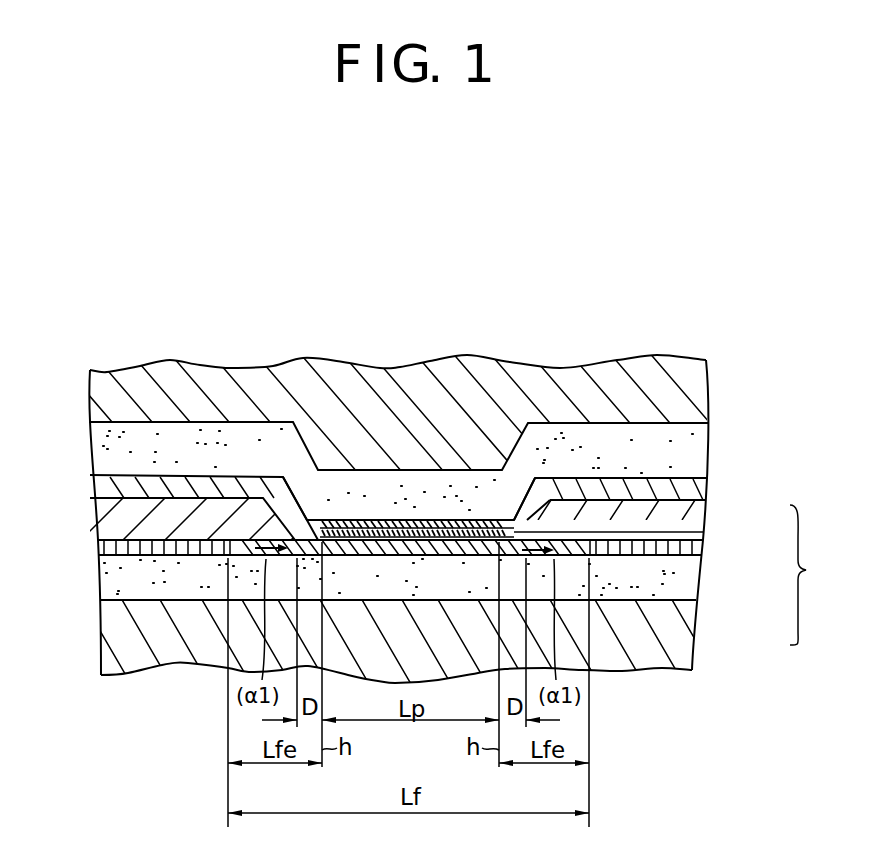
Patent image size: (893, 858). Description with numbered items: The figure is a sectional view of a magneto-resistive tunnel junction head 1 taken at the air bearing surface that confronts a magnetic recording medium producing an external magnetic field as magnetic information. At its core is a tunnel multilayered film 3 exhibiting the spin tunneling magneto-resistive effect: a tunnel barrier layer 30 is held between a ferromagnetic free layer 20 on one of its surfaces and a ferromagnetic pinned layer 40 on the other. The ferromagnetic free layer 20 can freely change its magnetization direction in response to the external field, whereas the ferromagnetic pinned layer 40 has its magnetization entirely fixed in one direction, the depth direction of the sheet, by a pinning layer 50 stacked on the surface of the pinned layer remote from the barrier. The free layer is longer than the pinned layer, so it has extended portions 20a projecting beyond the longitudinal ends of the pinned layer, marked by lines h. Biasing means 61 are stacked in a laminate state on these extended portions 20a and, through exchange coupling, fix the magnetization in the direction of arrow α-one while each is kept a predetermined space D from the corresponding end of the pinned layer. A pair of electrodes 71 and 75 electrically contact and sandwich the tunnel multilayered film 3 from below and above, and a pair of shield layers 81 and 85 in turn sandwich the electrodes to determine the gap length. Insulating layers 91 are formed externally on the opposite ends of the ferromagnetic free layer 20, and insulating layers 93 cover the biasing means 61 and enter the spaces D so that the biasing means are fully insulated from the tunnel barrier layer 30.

The magneto-resistive tunnel junction head 1 is at (549, 294).
The tunnel multilayered film 3 is at (806, 575).
The ferromagnetic free layer 20 is at (690, 560).
The extended portion 20a is at (230, 558).
The tunnel barrier layer 30 is at (694, 540).
The ferromagnetic pinned layer 40 is at (704, 532).
The pinning layer 50 is at (704, 520).
The biasing means 61 is at (98, 525).
The electrode 71 is at (108, 578).
The electrode 75 is at (93, 448).
The shield layer 81 is at (113, 635).
The shield layer 85 is at (90, 391).
The insulating layer 91 is at (100, 549).
The insulating layer 93 is at (93, 490).